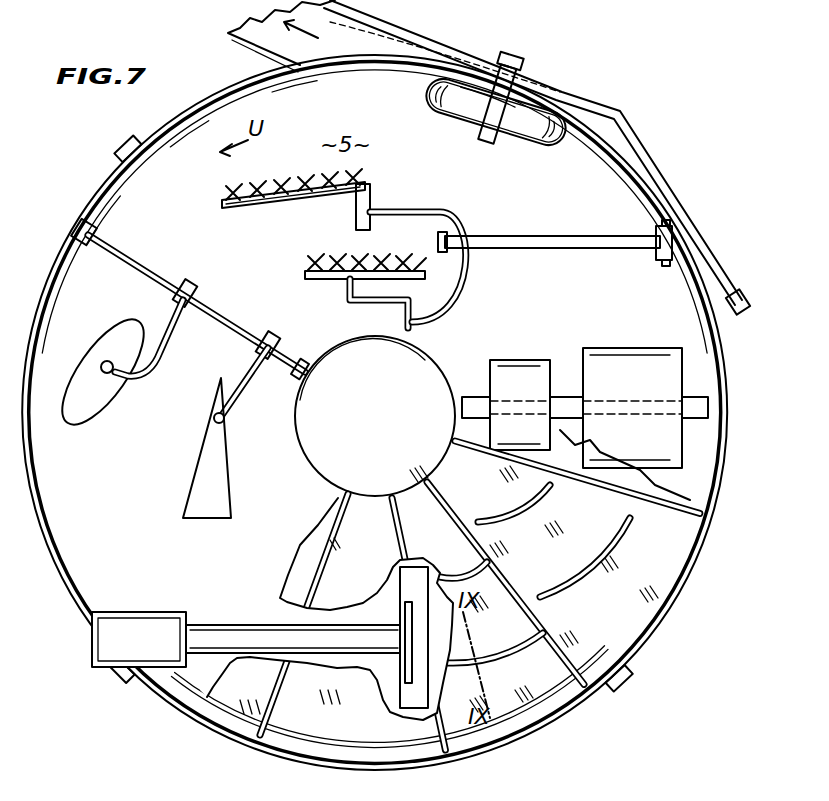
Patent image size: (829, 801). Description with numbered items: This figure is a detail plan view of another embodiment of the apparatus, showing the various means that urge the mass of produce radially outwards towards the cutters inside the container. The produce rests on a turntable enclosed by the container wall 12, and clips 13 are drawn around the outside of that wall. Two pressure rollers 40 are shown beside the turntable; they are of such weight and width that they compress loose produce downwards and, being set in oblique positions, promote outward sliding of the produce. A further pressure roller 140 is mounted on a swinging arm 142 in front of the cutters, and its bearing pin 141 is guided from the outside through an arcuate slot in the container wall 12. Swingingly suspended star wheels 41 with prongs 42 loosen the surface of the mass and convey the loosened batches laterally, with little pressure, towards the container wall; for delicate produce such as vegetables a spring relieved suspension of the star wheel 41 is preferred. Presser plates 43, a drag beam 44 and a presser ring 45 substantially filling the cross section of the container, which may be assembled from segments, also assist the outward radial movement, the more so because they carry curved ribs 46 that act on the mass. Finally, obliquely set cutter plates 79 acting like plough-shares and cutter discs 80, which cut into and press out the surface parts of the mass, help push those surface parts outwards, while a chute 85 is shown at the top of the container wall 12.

The container wall 12 is at (383, 56).
The clip 13 is at (120, 150).
The pressure roller 40 is at (526, 372).
The star wheel 41 is at (280, 212).
The brush bristles 42 is at (308, 186).
The presser plate 43 is at (470, 590).
The drag beam 44 is at (418, 606).
The presser ring 45 is at (550, 706).
The curved rib 46 is at (590, 566).
The oblique cutter plate 79 is at (216, 466).
The cutter disc 80 is at (115, 394).
The chute 85 is at (394, 46).
The pressure roller 140 is at (455, 108).
The bearing pin 141 is at (518, 72).
The swinging arm 142 is at (640, 122).